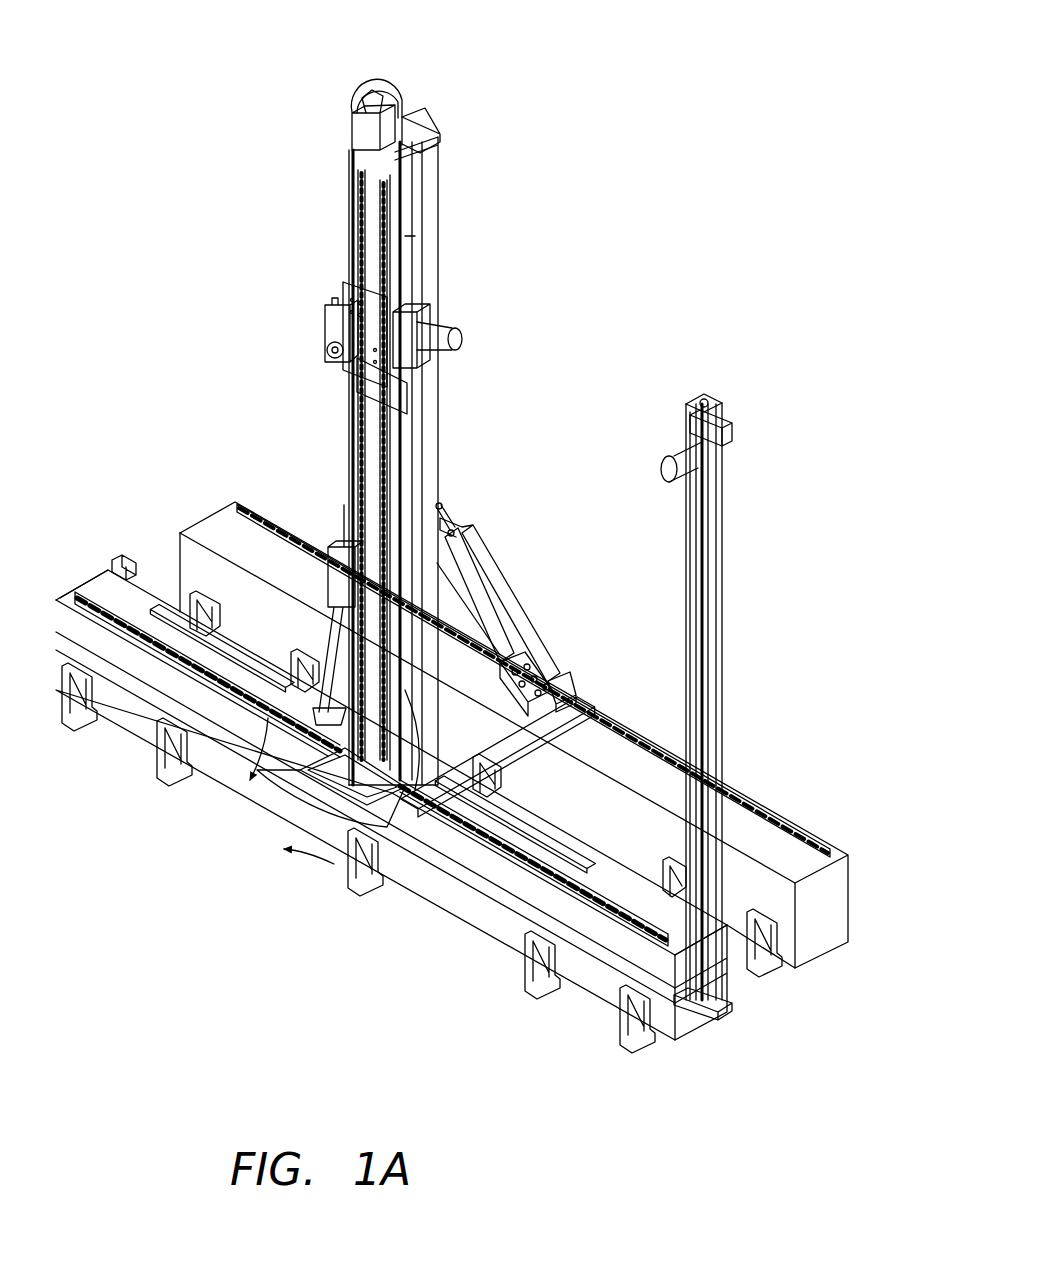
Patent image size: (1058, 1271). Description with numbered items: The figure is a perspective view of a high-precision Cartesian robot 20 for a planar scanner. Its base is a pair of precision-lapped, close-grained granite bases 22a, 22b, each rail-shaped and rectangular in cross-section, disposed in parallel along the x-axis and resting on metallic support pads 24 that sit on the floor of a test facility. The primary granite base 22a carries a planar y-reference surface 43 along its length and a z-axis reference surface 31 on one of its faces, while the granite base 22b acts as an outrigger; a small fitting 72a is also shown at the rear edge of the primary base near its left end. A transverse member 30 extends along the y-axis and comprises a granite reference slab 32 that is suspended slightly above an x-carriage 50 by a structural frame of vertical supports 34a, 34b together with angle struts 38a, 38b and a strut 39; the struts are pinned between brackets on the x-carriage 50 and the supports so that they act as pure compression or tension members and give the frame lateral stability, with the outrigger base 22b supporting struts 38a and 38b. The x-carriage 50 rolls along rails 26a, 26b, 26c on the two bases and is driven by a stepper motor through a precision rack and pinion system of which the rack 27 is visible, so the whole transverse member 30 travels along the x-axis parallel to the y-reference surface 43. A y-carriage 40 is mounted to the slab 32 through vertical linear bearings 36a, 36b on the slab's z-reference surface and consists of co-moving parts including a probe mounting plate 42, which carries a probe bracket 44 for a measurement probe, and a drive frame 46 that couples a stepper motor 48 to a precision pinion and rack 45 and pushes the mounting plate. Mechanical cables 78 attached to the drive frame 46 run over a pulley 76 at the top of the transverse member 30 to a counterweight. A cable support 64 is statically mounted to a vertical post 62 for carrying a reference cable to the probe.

The Cartesian robot 20 is at (650, 280).
The primary granite base 22a is at (702, 1020).
The granite base 22b is at (852, 872).
The support pads 24 is at (640, 1038).
The rail 26a is at (765, 805).
The rail 26b is at (610, 890).
The rail 26c is at (522, 830).
The rack 27 is at (232, 655).
The transverse member 30 is at (403, 435).
The z-axis reference surface 31 is at (668, 1000).
The reference slab 32 is at (355, 172).
The vertical support 34a is at (440, 208).
The vertical support 34b is at (350, 150).
The vertical linear bearing 36a is at (358, 222).
The vertical linear bearing 36b is at (378, 248).
The angle strut 38a is at (478, 560).
The angle strut 38b is at (520, 595).
The strut 39 is at (343, 528).
The y-carriage 40 is at (373, 345).
The probe mounting plate 42 is at (343, 288).
The y-reference surface 43 is at (100, 590).
The probe bracket 44 is at (325, 322).
The rack 45 is at (412, 232).
The drive frame 46 is at (432, 310).
The stepper motor 48 is at (458, 332).
The x-carriage 50 is at (492, 711).
The vertical post 62 is at (722, 525).
The cable support 64 is at (690, 460).
The stop bracket 72a is at (125, 558).
The pulley 76 is at (386, 80).
The mechanical cables 78 is at (424, 130).